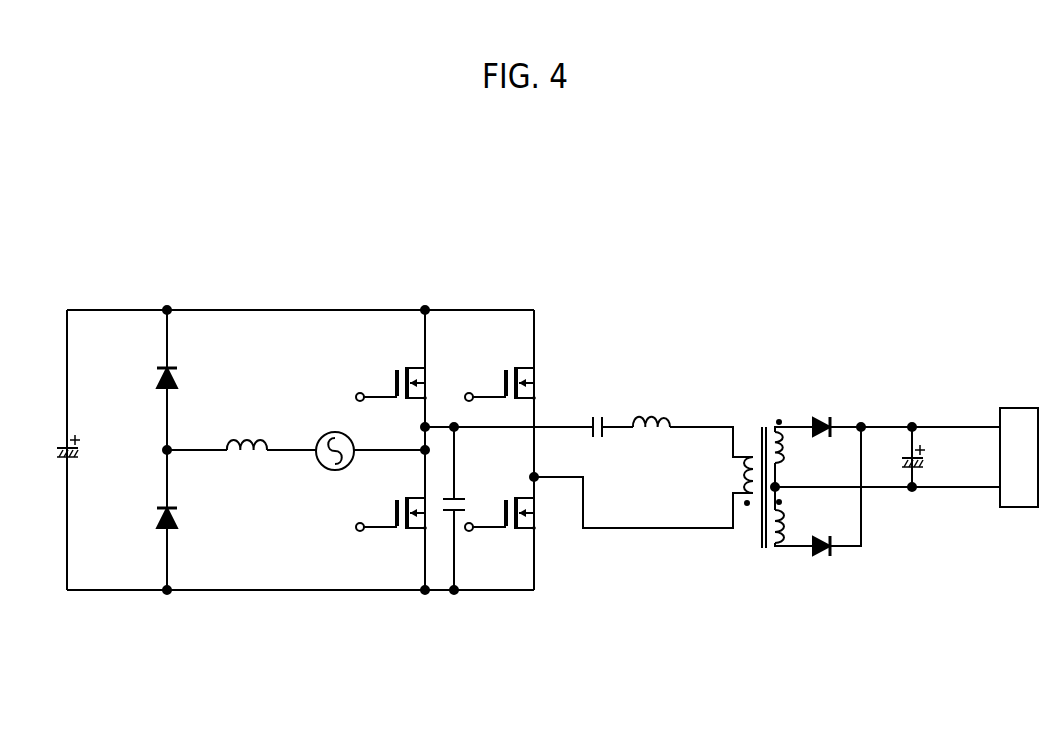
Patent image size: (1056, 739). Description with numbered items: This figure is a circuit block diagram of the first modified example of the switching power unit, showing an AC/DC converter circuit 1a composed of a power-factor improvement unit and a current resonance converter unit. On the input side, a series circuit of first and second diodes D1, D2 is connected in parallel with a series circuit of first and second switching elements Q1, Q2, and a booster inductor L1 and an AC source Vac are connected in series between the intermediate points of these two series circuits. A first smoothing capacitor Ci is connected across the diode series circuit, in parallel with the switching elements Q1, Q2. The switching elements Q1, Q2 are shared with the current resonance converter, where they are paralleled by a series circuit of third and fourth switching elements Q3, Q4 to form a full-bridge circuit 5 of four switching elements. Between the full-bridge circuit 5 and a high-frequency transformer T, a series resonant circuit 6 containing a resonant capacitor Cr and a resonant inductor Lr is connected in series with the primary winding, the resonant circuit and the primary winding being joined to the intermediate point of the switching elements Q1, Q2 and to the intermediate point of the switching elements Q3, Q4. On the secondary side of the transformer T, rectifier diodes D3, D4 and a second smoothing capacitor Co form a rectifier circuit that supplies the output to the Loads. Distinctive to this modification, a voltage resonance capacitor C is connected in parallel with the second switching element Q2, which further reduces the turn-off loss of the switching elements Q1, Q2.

The AC/DC converter circuit 1a is at (645, 245).
The full-bridge circuit 5 is at (475, 290).
The series resonant circuit 6 is at (673, 393).
The voltage resonance capacitor C is at (447, 515).
The first smoothing capacitor Ci is at (83, 453).
The first diode D1 is at (148, 378).
The second diode D2 is at (148, 518).
The booster inductor L1 is at (247, 469).
The AC source Vac is at (335, 470).
The first switching element Q1 is at (391, 362).
The second switching element Q2 is at (391, 494).
The third switching element Q3 is at (500, 362).
The fourth switching element Q4 is at (500, 494).
The resonant capacitor Cr is at (595, 407).
The resonant inductor Lr is at (651, 402).
The high-frequency transformer T is at (761, 465).
The rectifier diode D3 is at (823, 406).
The rectifier diode D4 is at (823, 527).
The second smoothing capacitor Co is at (910, 435).
The load Loads is at (1017, 443).